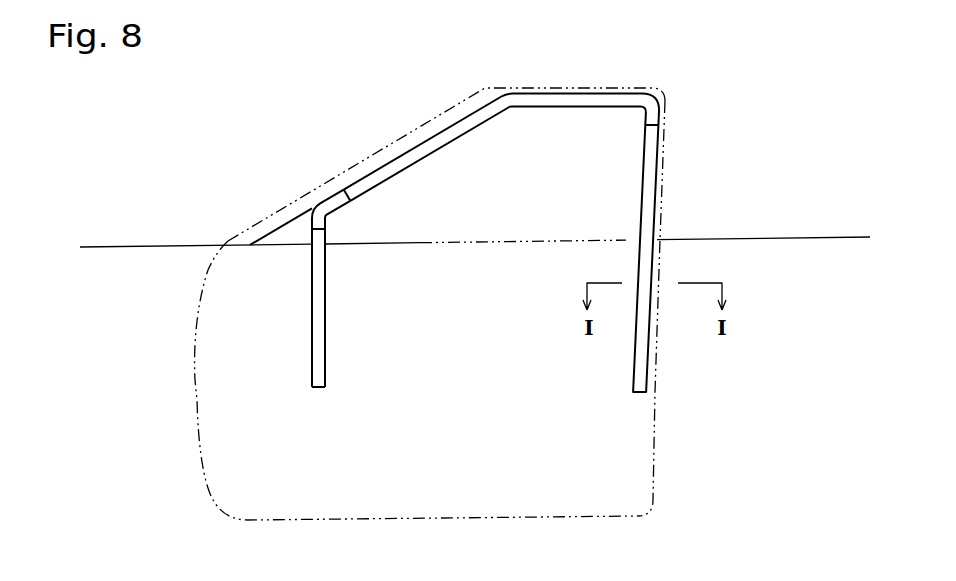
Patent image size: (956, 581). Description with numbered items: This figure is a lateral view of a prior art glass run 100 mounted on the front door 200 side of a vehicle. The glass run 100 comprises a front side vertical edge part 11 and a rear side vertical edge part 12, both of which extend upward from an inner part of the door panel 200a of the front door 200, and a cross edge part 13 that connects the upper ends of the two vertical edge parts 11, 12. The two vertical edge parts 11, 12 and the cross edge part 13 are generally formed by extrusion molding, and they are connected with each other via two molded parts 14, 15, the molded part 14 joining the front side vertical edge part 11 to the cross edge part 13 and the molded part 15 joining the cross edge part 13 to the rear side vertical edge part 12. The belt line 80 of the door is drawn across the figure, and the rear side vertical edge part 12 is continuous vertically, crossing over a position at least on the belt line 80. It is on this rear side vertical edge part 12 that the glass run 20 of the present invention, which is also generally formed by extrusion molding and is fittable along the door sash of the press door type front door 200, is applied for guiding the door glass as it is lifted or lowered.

The glass run 100 is at (495, 215).
The front side vertical edge part 11 is at (302, 229).
The rear side vertical edge part 12 is at (683, 258).
The glass run 20 is at (645, 258).
The cross edge part 13 is at (623, 62).
The molded part 14 is at (316, 193).
The molded part 15 is at (655, 90).
The belt line 80 is at (790, 237).
The front door 200 is at (484, 327).
The door panel 200a is at (632, 435).